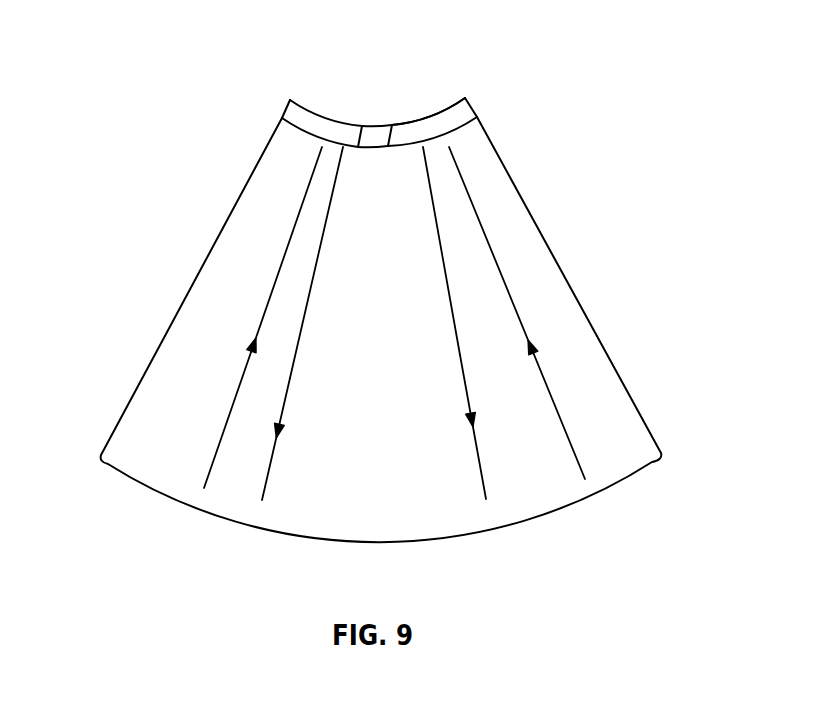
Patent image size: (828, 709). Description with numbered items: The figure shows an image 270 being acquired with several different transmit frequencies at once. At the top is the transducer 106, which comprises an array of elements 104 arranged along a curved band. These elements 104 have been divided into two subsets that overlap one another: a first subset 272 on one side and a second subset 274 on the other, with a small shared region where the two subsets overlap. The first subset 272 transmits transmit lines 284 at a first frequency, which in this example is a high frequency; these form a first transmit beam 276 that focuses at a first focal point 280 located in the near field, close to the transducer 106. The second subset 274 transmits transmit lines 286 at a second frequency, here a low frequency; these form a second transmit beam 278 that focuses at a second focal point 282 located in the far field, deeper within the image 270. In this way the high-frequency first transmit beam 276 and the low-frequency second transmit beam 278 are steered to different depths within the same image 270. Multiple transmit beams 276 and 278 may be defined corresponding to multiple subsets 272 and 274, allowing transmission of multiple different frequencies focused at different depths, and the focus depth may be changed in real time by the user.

The elements 104 is at (292, 114).
The transducer 106 is at (476, 98).
The image 270 is at (600, 338).
The first subset 272 is at (393, 123).
The second subset 274 is at (462, 98).
The first transmit beam 276 is at (402, 276).
The second transmit beam 278 is at (403, 494).
The first focal point 280 is at (332, 195).
The second focal point 282 is at (479, 460).
The transmit lines 284 is at (288, 387).
The transmit lines 286 is at (451, 310).